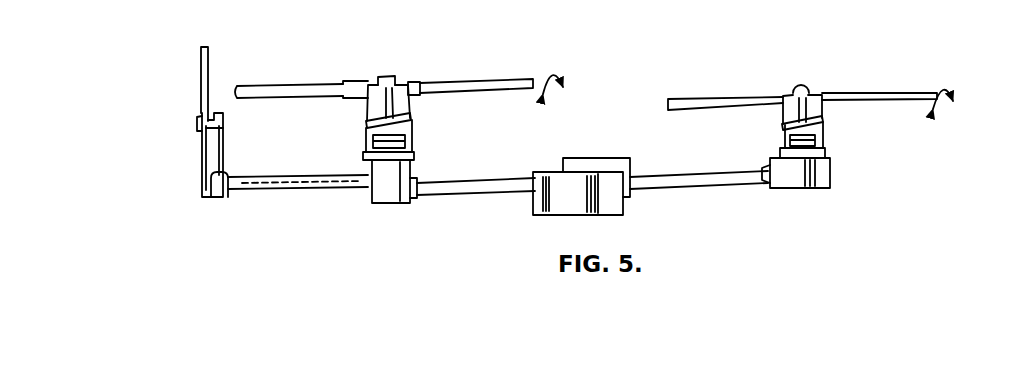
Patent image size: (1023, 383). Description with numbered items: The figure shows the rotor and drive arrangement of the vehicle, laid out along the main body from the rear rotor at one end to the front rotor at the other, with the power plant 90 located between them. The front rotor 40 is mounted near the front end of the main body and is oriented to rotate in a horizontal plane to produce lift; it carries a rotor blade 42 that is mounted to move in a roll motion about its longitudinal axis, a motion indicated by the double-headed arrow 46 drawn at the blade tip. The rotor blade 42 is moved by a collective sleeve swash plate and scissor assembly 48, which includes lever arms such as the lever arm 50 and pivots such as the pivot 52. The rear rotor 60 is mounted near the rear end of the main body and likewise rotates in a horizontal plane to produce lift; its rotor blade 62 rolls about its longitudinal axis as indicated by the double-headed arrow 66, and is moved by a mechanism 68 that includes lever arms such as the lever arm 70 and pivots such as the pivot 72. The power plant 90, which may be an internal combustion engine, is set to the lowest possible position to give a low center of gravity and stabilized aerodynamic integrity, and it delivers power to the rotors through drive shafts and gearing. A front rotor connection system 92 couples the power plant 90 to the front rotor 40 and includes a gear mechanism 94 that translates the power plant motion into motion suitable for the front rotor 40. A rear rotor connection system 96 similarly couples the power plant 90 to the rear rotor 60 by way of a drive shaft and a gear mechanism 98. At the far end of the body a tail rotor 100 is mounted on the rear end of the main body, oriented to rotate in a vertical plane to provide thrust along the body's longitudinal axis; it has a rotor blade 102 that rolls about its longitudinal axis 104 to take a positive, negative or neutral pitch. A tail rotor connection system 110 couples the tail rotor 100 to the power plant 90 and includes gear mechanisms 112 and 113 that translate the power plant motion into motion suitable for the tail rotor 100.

The front rotor 40 is at (851, 92).
The rotor blade 42 is at (900, 92).
The double-headed arrow 46 is at (948, 84).
The collective sleeve swash plate and scissor assembly 48 is at (830, 125).
The lever arm 50 is at (826, 108).
The pivot 52 is at (788, 124).
The rear rotor 60 is at (384, 96).
The rotor blade 62 is at (479, 82).
The double-headed arrow 66 is at (555, 67).
The mechanism 68 is at (430, 122).
The lever arm 70 is at (413, 128).
The pivot 72 is at (365, 118).
The power plant 90 is at (541, 203).
The front rotor connection system 92 is at (715, 186).
The gear mechanism 94 is at (833, 171).
The rear rotor connection system 96 is at (441, 207).
The gear mechanism 98 is at (381, 180).
The tail rotor 100 is at (197, 118).
The rotor blade 102 is at (200, 92).
The longitudinal axis 104 is at (209, 62).
The tail rotor connection system 110 is at (271, 192).
The gear mechanism 112 is at (222, 187).
The gear mechanism 113 is at (212, 131).